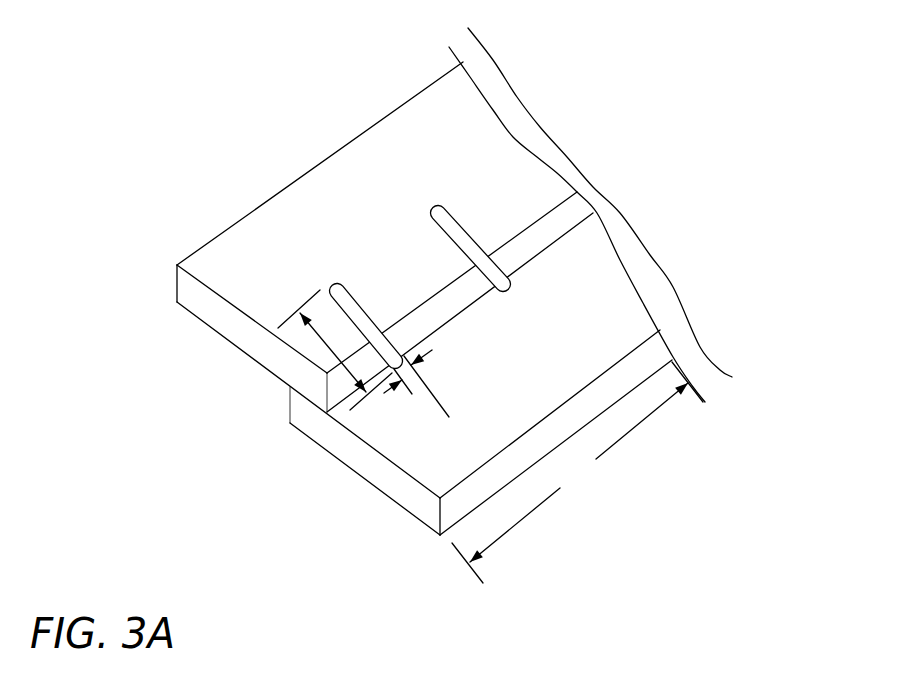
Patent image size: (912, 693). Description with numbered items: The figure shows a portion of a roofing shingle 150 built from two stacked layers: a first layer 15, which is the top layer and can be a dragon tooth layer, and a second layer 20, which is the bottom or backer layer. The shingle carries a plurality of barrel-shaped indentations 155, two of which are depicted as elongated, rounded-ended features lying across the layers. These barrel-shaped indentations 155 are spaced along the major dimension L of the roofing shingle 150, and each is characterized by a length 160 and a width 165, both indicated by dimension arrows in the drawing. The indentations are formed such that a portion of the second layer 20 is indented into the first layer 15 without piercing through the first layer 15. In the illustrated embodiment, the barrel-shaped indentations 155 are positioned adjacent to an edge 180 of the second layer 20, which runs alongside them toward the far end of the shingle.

The roofing shingle 150 is at (245, 78).
The second layer 20 is at (248, 265).
The first layer 15 is at (447, 423).
The barrel-shaped indentations 155 is at (343, 280).
The edge 180 is at (510, 253).
The length 160 is at (332, 352).
The width 165 is at (449, 417).
The major dimension L is at (577, 472).